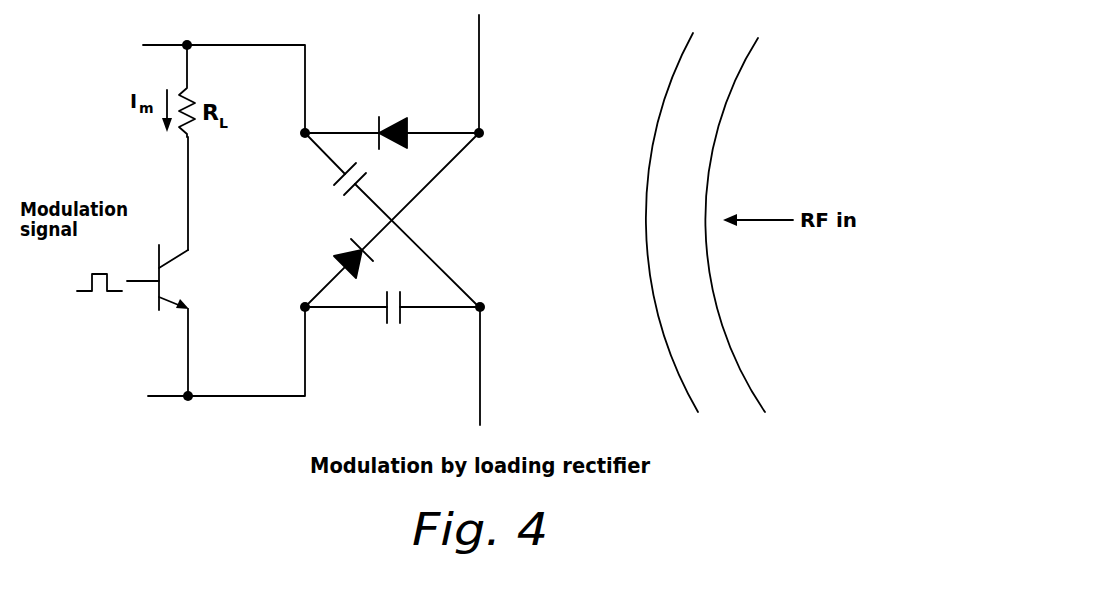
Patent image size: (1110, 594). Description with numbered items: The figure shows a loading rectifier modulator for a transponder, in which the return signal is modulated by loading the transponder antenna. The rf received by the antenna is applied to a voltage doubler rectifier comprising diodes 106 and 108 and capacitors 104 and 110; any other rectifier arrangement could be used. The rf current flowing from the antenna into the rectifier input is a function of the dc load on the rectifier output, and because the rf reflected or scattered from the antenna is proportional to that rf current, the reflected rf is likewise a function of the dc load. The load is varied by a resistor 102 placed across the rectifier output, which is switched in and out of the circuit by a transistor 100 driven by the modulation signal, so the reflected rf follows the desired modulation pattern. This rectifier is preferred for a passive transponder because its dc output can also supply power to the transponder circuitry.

The transistor 100 is at (157, 300).
The resistor 102 is at (194, 99).
The capacitor 104 is at (385, 323).
The diode 106 is at (397, 120).
The diode 108 is at (337, 252).
The capacitor 110 is at (333, 180).